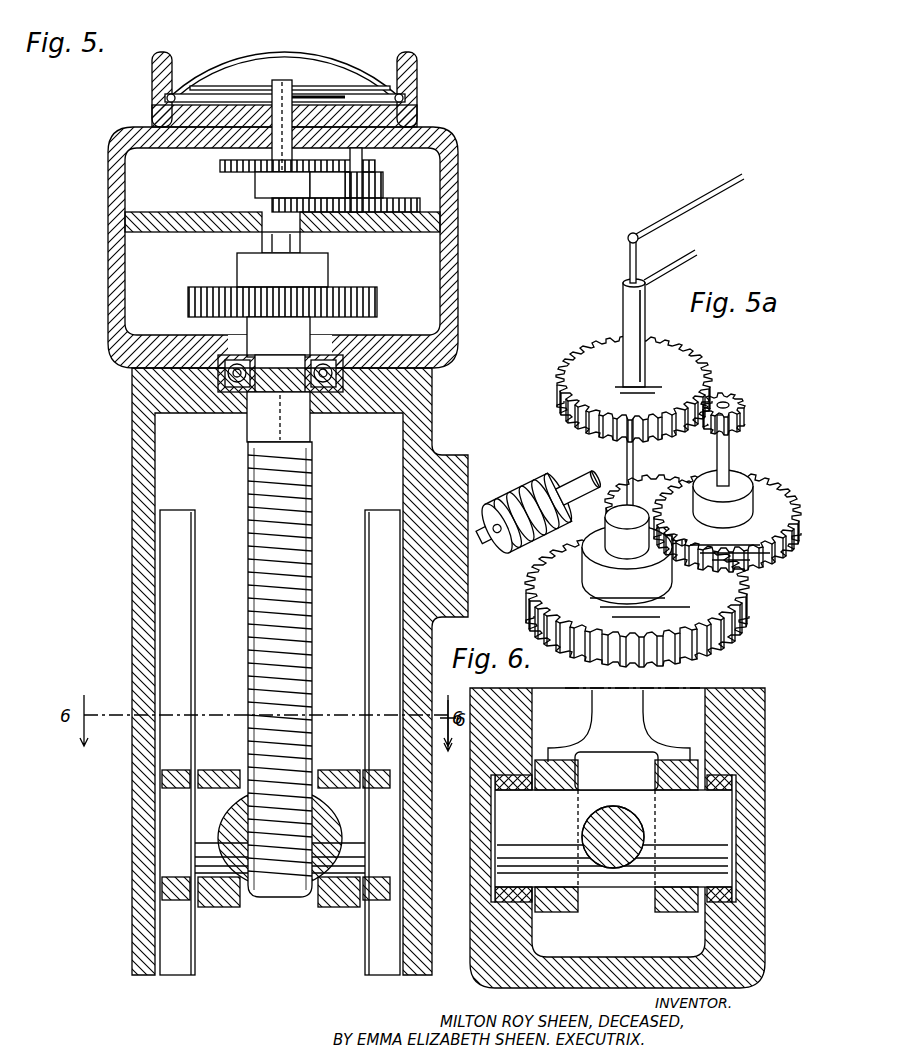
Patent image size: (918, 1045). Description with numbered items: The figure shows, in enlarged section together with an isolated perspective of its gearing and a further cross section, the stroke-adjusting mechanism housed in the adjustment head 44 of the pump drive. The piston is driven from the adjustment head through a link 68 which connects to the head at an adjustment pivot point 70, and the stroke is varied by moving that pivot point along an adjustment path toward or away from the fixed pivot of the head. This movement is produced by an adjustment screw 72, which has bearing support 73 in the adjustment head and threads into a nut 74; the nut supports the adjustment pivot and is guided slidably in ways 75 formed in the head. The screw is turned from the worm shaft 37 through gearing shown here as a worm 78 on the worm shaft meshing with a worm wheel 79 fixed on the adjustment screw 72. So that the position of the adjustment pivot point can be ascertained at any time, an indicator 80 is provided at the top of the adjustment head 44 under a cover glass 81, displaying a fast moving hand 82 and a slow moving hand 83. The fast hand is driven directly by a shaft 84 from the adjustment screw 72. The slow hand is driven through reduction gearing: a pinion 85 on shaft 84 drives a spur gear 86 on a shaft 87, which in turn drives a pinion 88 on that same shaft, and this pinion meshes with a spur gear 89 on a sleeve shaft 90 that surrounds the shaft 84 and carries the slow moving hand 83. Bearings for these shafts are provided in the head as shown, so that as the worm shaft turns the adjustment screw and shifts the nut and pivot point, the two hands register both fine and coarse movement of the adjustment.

In FIG. 5A, the worm shaft 37 is at (583, 483).
In FIG. 5, the adjustment head 44 is at (132, 402).
In FIG. 6, the adjustment head 44 is at (483, 962).
In FIG. 5, the link 68 is at (333, 908).
In FIG. 6, the link 68 is at (653, 905).
In FIG. 5, the adjustment pivot point 70 is at (313, 880).
In FIG. 6, the adjustment pivot point 70 is at (686, 850).
In FIG. 5, the adjustment screw 72 is at (312, 612).
In FIG. 6, the adjustment screw 72 is at (596, 792).
In FIG. 5, the bearing support 73 is at (320, 396).
In FIG. 5, the nut 74 is at (220, 905).
In FIG. 6, the nut 74 is at (613, 806).
In FIG. 5, the ways 75 is at (190, 638).
In FIG. 6, the ways 75 is at (736, 776).
In FIG. 5A, the worm 78 is at (535, 501).
In FIG. 5, the worm wheel 79 is at (374, 298).
In FIG. 5A, the worm wheel 79 is at (735, 582).
In FIG. 5, the indicator 80 is at (343, 58).
In FIG. 5, the cover glass 81 is at (360, 78).
In FIG. 5, the fast moving hand 82 is at (316, 90).
In FIG. 5A, the fast moving hand 82 is at (710, 197).
In FIG. 5, the slow moving hand 83 is at (320, 96).
In FIG. 5A, the slow moving hand 83 is at (660, 272).
In FIG. 5A, the shaft 84 is at (630, 266).
In FIG. 5, the pinion 85 is at (272, 203).
In FIG. 5A, the pinion 85 is at (652, 478).
In FIG. 5, the spur gear 86 is at (458, 192).
In FIG. 5A, the spur gear 86 is at (770, 490).
In FIG. 5, the shaft 87 is at (364, 153).
In FIG. 5A, the shaft 87 is at (732, 438).
In FIG. 5, the pinion 88 is at (378, 177).
In FIG. 5A, the pinion 88 is at (740, 401).
In FIG. 5, the spur gear 89 is at (220, 166).
In FIG. 5A, the spur gear 89 is at (566, 375).
In FIG. 5, the sleeve shaft 90 is at (268, 96).
In FIG. 5A, the sleeve shaft 90 is at (623, 314).